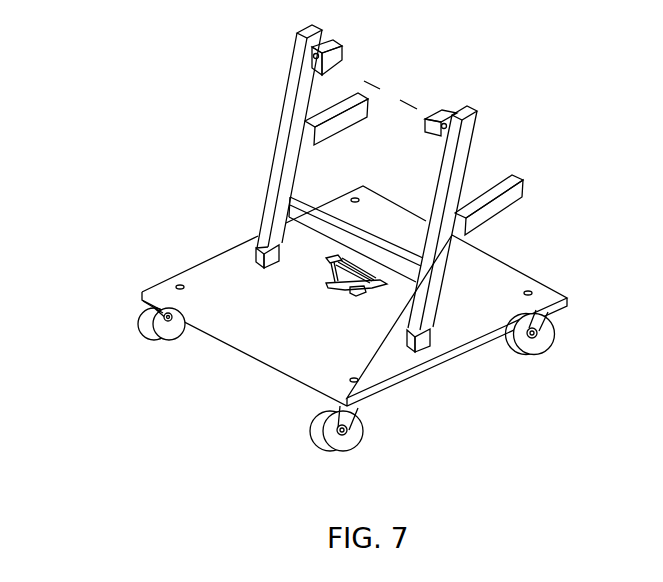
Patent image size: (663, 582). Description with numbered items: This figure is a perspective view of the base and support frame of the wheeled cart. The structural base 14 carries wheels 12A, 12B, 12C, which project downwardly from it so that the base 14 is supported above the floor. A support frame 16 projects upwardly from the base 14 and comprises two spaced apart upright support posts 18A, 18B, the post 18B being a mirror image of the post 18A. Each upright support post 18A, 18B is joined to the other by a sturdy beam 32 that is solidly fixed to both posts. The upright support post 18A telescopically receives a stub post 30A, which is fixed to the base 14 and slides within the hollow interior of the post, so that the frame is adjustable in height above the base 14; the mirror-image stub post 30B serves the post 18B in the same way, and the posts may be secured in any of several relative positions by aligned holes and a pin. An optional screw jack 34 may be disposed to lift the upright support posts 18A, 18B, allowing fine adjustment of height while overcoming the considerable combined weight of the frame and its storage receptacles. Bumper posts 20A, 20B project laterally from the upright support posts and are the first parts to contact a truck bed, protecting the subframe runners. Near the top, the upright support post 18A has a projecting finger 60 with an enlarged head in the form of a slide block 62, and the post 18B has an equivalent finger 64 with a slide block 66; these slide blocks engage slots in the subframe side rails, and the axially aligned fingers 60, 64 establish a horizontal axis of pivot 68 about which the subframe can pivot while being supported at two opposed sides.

The support frame 16 is at (548, 177).
The structural base 14 is at (200, 277).
The wheel 12A is at (334, 440).
The wheel 12B is at (530, 344).
The caster wheel 12C is at (163, 327).
The upright support post 18A is at (463, 143).
The upright support post 18B is at (285, 117).
The bumper post 20A is at (512, 198).
The bumper post 20B is at (336, 122).
The stub post 30A is at (426, 341).
The post foot / base mount 30B is at (253, 251).
The beam 32 is at (340, 225).
The screw jack 34 is at (326, 311).
The projecting finger 60 is at (441, 130).
The slide block 62 is at (435, 112).
The finger 64 is at (319, 54).
The slide block 66 is at (343, 58).
The horizontal axis of pivot 68 is at (384, 88).